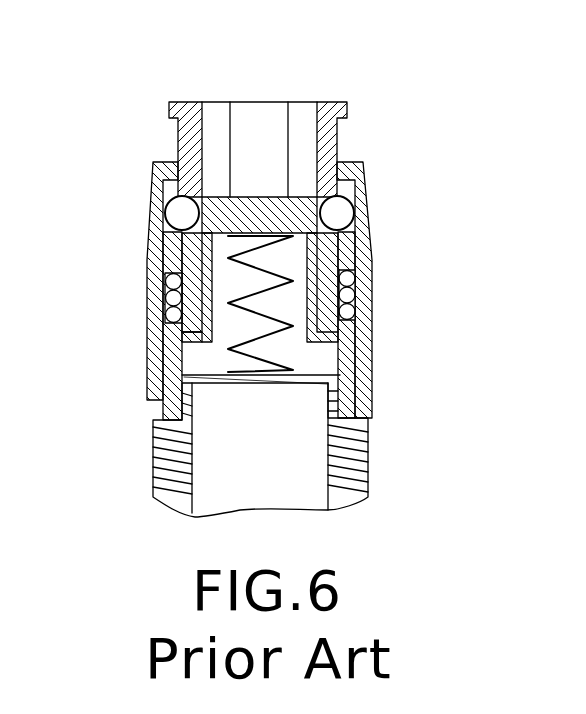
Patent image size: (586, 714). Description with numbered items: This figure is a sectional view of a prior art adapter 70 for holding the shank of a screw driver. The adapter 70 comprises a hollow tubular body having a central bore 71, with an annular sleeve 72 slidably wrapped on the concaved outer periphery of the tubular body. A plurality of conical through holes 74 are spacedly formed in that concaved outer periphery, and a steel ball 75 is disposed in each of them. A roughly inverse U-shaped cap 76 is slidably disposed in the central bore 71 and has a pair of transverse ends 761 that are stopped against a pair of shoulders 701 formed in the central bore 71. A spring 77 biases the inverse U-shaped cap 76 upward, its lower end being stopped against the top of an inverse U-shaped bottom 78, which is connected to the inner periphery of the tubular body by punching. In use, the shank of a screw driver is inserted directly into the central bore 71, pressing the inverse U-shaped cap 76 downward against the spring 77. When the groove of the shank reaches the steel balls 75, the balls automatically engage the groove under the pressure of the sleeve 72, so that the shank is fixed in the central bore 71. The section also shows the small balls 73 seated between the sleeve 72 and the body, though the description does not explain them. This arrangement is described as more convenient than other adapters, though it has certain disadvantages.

The adapter 70 is at (289, 276).
The central bore 71 is at (297, 157).
The annular sleeve 72 is at (372, 270).
The balls 73 is at (352, 313).
The conical through holes 74 is at (340, 236).
The steel balls 75 is at (345, 207).
The inverse U-shaped cap 76 is at (215, 208).
The transverse ends 761 is at (186, 338).
The spring 77 is at (227, 364).
The inverse U-shaped bottom 78 is at (190, 393).
The shoulders 701 is at (164, 312).